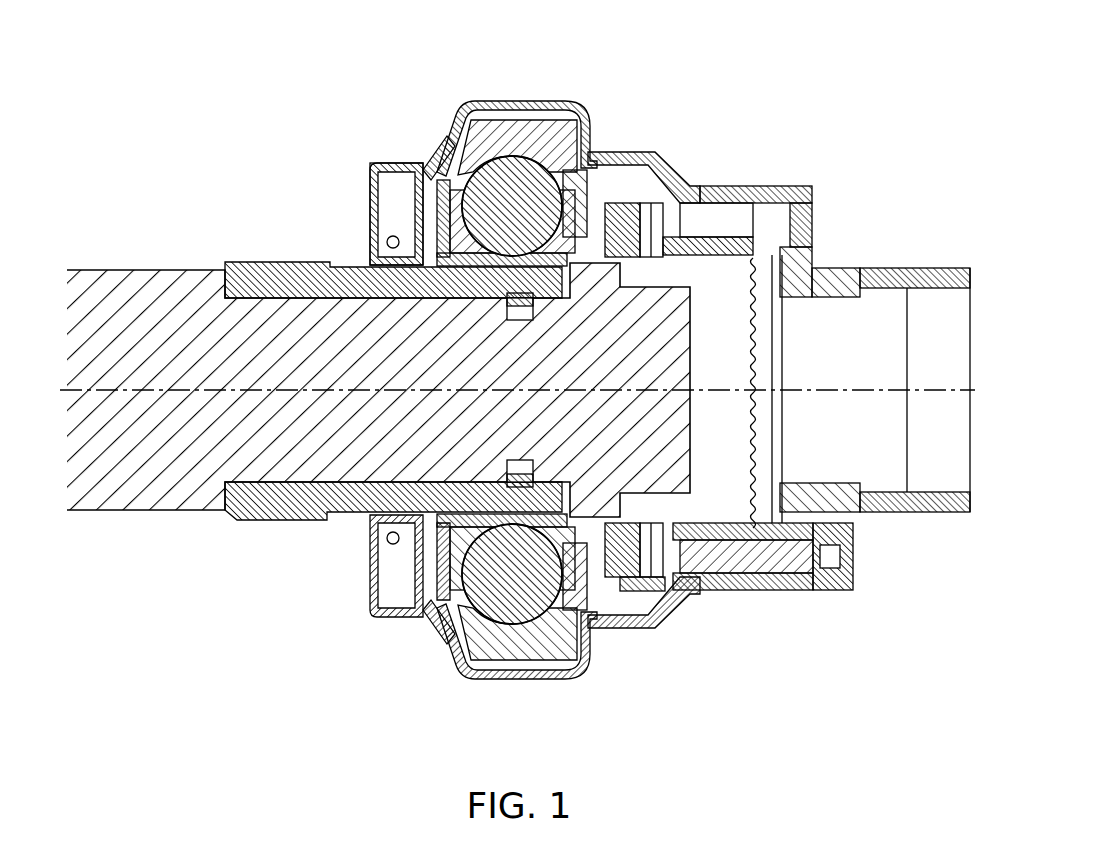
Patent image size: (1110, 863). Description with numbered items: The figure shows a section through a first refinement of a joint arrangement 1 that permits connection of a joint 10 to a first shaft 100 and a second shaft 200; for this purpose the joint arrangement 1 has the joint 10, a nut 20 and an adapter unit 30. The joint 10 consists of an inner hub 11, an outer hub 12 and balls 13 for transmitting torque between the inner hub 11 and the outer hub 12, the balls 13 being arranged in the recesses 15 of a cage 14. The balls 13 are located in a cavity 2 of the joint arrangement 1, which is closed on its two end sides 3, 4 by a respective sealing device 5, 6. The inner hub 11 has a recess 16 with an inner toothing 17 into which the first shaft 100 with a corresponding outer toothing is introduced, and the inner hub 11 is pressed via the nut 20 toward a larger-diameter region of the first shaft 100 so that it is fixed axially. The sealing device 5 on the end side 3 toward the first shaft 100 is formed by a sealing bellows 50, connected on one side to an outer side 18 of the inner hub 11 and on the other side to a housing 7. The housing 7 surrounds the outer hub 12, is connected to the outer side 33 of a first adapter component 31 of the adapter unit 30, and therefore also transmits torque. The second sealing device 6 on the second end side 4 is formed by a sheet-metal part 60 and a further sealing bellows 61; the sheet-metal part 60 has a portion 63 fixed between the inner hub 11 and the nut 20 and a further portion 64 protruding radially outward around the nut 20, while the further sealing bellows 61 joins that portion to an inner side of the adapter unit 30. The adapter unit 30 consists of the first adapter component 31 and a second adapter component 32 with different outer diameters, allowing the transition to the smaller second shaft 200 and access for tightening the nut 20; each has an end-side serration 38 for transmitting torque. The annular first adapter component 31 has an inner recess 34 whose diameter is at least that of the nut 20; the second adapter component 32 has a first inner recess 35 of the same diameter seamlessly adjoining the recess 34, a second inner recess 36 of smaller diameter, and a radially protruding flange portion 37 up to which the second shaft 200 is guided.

The joint arrangement 1 is at (760, 70).
The cavity 2 is at (612, 150).
The end side 3 is at (368, 148).
The end side 4 is at (690, 186).
The sealing device 5 is at (410, 135).
The sealing device 6 is at (640, 603).
The housing 7 is at (582, 118).
The joint 10 is at (551, 86).
The inner hub 11 is at (273, 518).
The outer hub 12 is at (478, 662).
The balls 13 is at (430, 600).
The cage 14 is at (400, 583).
The recesses 15 is at (598, 657).
The recess 16 is at (212, 452).
The inner toothing 17 is at (288, 263).
The outer side 18 is at (363, 520).
The nut 20 is at (680, 545).
The adapter unit 30 is at (808, 620).
The first adapter component 31 is at (733, 580).
The second adapter component 32 is at (853, 560).
The outer side 33 is at (772, 186).
The inner recess 34 is at (790, 230).
The first inner recess 35 is at (800, 250).
The second inner recess 36 is at (850, 268).
The flange portion 37 is at (850, 512).
The end-side serration 38 is at (825, 590).
The sealing bellows 50 is at (378, 210).
The sheet-metal part 60 is at (614, 178).
The further sealing bellows 61 is at (665, 192).
The portion 63 is at (470, 107).
The further portion 64 is at (525, 102).
The first shaft 100 is at (110, 359).
The second shaft 200 is at (915, 359).